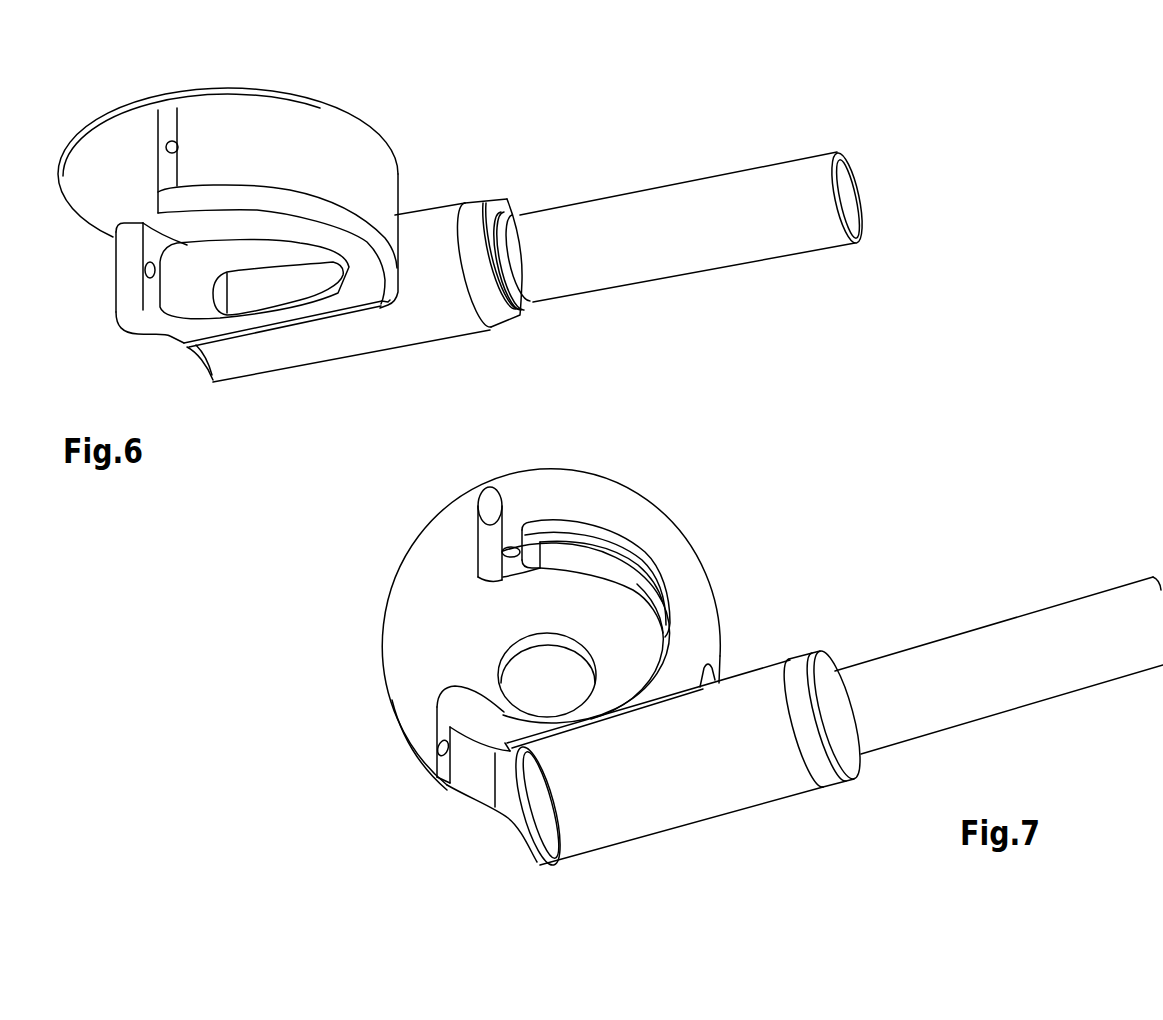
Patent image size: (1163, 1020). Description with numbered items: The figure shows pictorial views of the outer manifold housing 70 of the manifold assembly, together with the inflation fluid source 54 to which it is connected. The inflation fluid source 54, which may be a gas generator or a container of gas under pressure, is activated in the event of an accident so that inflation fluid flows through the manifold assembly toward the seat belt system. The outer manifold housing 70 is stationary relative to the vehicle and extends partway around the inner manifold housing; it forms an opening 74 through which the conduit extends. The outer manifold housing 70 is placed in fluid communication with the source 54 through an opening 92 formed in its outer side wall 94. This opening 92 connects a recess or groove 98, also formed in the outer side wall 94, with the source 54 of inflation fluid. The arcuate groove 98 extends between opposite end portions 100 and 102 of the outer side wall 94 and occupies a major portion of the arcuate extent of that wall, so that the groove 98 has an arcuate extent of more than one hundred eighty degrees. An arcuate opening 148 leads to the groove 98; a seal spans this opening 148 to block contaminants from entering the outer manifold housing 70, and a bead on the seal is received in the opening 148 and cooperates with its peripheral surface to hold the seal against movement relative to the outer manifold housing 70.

In FIG. 6, the inflation fluid source 54 is at (648, 217).
In FIG. 7, the inflation fluid source 54 is at (987, 660).
In FIG. 6, the outer manifold housing 70 is at (238, 239).
In FIG. 7, the outer manifold housing 70 is at (543, 630).
In FIG. 6, the opening 74 is at (115, 163).
In FIG. 7, the opening 74 is at (460, 602).
In FIG. 6, the opening 92 is at (290, 290).
In FIG. 6, the outer side wall 94 is at (303, 100).
In FIG. 7, the outer side wall 94 is at (693, 617).
In FIG. 6, the groove 98 is at (183, 290).
In FIG. 7, the groove 98 is at (592, 537).
In FIG. 7, the end portion 100 is at (510, 547).
In FIG. 7, the end portion 102 is at (417, 657).
In FIG. 6, the arcuate opening 148 is at (252, 295).
In FIG. 7, the arcuate opening 148 is at (615, 608).